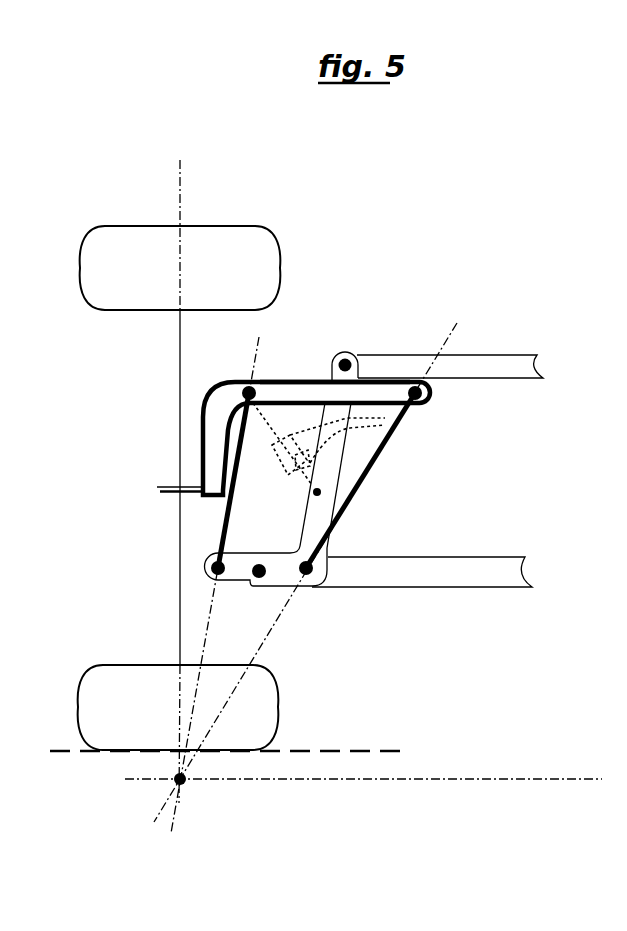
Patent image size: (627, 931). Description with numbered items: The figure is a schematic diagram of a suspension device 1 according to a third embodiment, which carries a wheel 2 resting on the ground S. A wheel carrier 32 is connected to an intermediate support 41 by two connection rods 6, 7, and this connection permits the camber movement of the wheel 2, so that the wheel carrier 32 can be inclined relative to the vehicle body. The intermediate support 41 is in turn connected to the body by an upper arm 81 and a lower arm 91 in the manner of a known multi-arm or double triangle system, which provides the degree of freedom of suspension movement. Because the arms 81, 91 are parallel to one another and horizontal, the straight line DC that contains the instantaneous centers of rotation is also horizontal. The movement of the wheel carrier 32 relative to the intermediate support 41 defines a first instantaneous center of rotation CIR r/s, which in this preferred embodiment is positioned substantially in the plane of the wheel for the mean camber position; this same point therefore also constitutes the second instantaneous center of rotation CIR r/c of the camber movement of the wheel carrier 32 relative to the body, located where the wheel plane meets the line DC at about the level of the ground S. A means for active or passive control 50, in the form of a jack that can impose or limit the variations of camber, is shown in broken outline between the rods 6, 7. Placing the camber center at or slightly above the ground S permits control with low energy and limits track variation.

The suspension device 1 is at (348, 563).
The wheel 2 is at (178, 613).
The connection rod 6 is at (223, 517).
The connection rod 7 is at (358, 490).
The wheel carrier 32 is at (376, 396).
The intermediate support 41 is at (330, 548).
The means for active or passive control 50 is at (300, 412).
The upper arm 81 is at (483, 363).
The lower arm 91 is at (453, 573).
The ground S is at (355, 752).
The straight line DC is at (585, 780).
The instantaneous center of rotation CIR is at (186, 782).